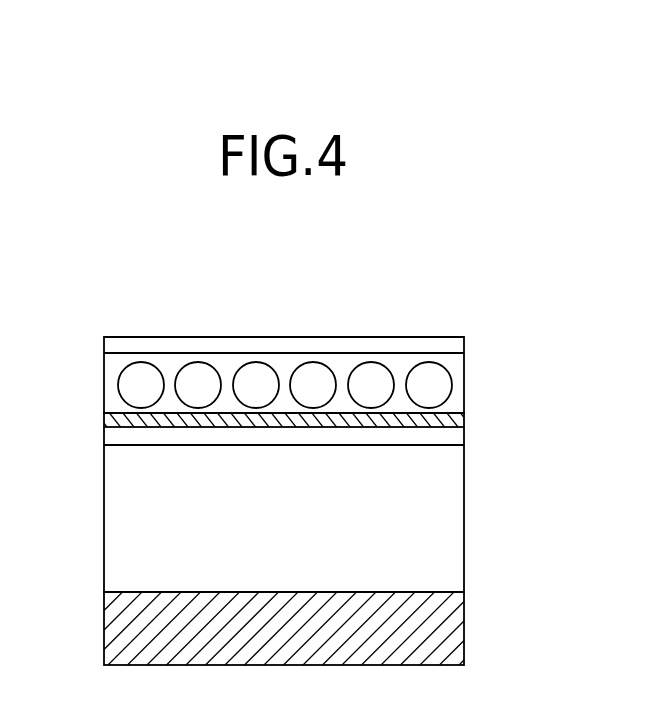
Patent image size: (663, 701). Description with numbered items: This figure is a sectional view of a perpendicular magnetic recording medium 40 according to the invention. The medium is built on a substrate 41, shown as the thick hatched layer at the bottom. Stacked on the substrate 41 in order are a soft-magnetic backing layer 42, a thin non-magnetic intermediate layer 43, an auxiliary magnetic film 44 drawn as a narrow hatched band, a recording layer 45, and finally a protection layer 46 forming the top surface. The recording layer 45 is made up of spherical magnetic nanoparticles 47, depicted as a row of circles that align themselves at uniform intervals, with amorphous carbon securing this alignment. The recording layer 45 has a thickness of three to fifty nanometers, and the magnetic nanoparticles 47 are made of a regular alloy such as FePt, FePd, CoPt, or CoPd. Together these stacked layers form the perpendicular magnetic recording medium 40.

The perpendicular magnetic recording medium 40 is at (118, 304).
The substrate 41 is at (464, 625).
The soft-magnetic backing layer 42 is at (464, 515).
The non-magnetic intermediate layer 43 is at (464, 438).
The auxiliary magnetic film 44 is at (464, 418).
The recording layer 45 is at (464, 375).
The protection layer 46 is at (464, 345).
The magnetic nanoparticles 47 is at (377, 362).